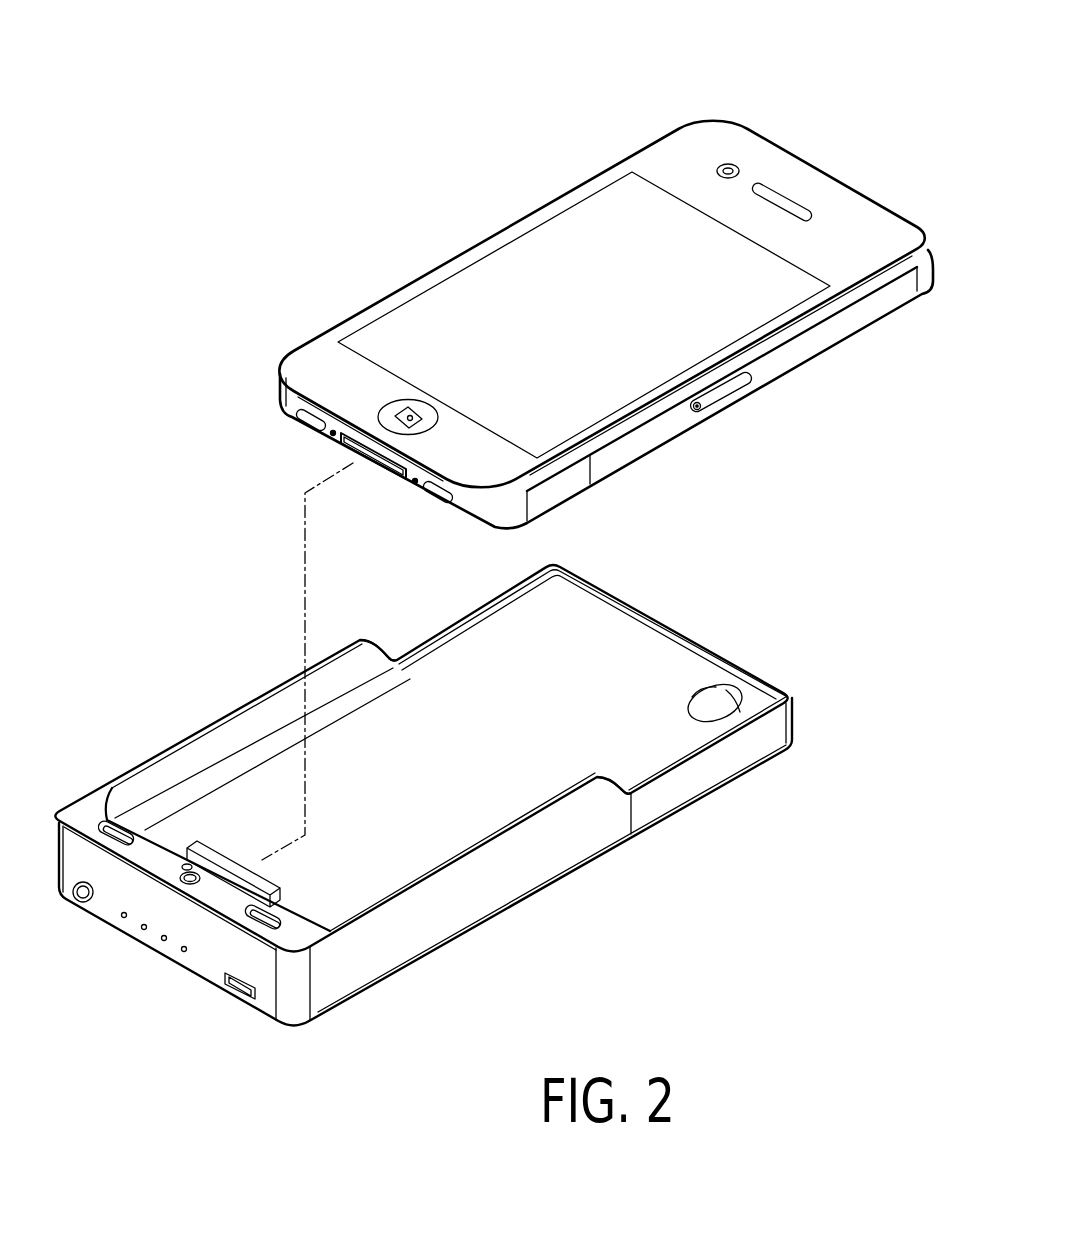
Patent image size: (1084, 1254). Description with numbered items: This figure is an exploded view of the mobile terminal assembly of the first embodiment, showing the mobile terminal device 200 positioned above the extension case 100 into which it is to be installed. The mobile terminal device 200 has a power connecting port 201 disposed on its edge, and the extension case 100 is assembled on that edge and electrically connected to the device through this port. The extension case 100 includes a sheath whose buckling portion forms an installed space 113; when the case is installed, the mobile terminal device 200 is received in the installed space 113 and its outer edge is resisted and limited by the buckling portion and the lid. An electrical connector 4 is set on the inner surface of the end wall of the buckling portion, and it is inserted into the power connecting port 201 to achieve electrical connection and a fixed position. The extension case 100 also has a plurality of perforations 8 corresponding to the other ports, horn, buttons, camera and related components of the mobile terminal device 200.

The mobile terminal device 200 is at (681, 118).
The power connecting port 201 is at (352, 463).
The extension case 100 is at (690, 812).
The installed space 113 is at (399, 671).
The perforations 8 is at (118, 828).
The electrical connector 4 is at (217, 865).